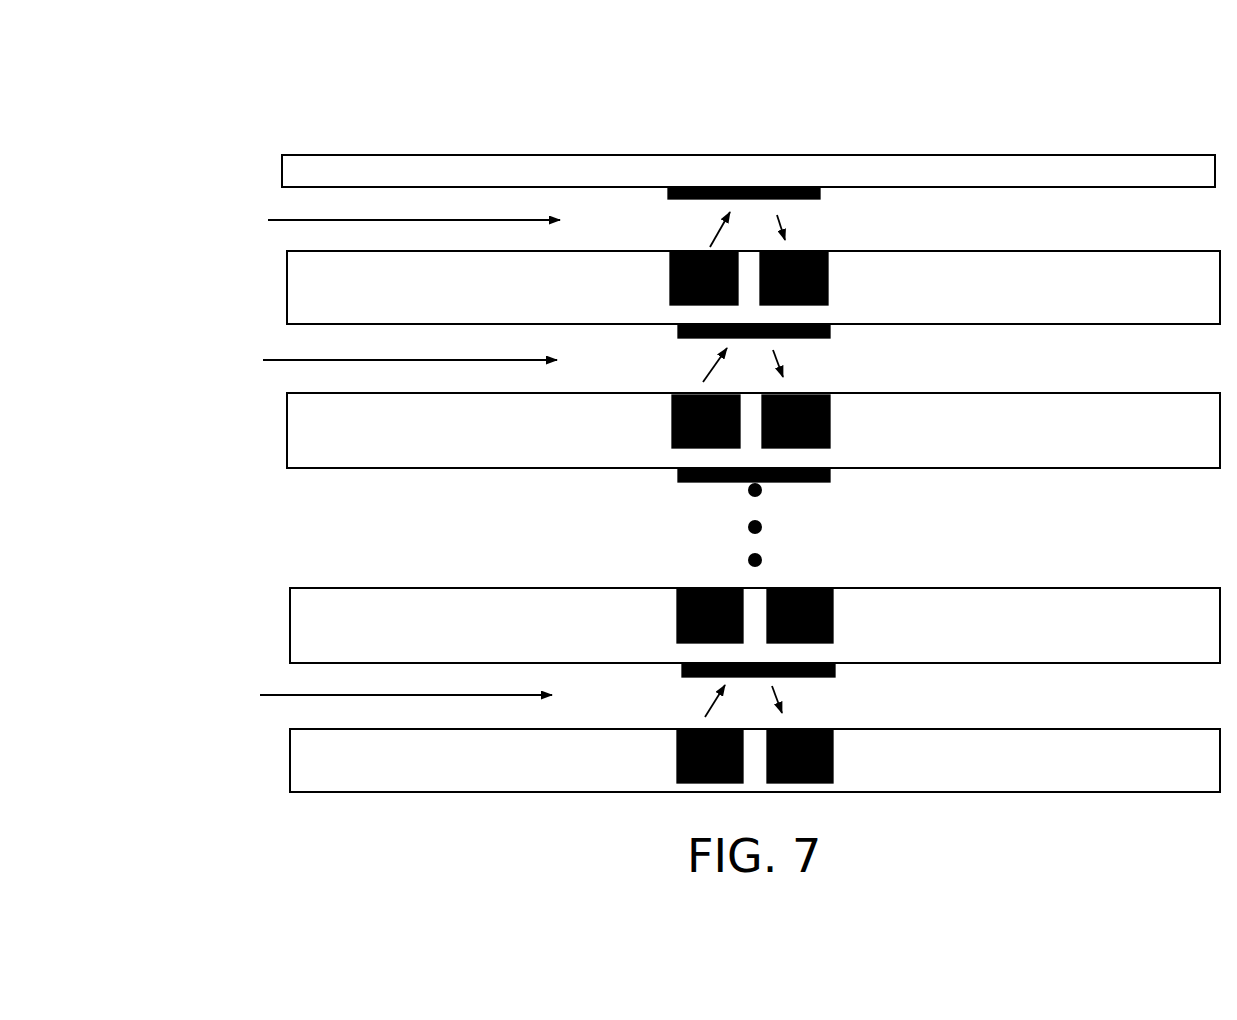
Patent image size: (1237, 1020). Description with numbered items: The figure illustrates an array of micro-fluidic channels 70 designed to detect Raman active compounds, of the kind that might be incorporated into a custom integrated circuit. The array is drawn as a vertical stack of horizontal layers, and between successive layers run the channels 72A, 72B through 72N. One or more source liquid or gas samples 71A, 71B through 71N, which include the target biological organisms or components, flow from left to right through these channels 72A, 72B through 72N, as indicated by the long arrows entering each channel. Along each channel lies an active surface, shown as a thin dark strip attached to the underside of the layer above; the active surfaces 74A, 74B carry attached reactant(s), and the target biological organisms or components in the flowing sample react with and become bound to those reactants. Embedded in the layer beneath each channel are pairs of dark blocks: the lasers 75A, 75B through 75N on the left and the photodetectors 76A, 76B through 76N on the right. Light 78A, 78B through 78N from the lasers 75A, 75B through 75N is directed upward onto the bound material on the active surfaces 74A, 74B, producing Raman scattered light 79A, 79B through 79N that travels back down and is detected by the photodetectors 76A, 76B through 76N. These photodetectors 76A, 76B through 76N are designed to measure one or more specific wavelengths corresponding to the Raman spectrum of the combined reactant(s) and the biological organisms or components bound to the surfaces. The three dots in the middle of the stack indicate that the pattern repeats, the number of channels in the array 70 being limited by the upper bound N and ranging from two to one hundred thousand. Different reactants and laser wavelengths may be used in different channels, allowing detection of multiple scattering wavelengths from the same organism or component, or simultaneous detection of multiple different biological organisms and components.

The array of micro-fluidic channels 70 is at (1127, 139).
The source liquid sample 71A is at (283, 220).
The source liquid sample 71B is at (287, 360).
The source liquid sample 71N is at (287, 695).
The channel 72A is at (1002, 230).
The channel 72B is at (998, 368).
The channel 72N is at (995, 703).
The active surface 74A is at (732, 188).
The active surface 74B is at (677, 327).
The laser 75A is at (670, 280).
The photodetector 76A is at (830, 283).
The laser 75B is at (672, 425).
The photodetector 76B is at (830, 425).
The laser 75N is at (677, 757).
The photodetector 76N is at (835, 752).
The light 78A is at (712, 232).
The Raman scattered light 79A is at (787, 228).
The light 78B is at (715, 365).
The Raman scattered light 79B is at (787, 363).
The light 78N is at (715, 700).
The Raman scattered light 79N is at (790, 698).